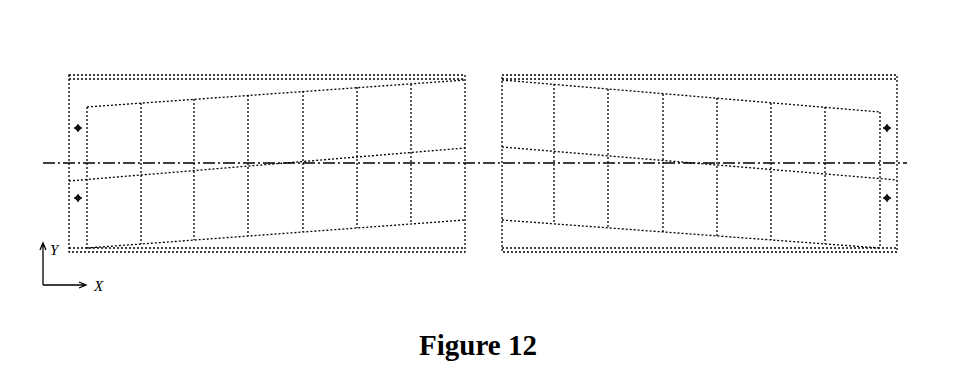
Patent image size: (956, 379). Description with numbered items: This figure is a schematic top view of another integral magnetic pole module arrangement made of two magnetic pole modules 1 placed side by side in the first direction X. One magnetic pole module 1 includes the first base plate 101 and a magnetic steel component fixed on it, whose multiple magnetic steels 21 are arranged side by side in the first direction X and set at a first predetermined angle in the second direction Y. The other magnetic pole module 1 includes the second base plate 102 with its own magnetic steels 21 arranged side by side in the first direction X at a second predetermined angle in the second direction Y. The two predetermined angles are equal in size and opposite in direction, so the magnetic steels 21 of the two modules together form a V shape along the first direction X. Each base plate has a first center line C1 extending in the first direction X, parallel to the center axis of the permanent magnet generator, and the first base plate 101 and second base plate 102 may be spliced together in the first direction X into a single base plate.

The magnetic pole module 1 is at (469, 23).
The first base plate 101 is at (828, 86).
The second base plate 102 is at (113, 91).
The magnetic steel 21 is at (173, 112).
The first center line C1 is at (78, 161).